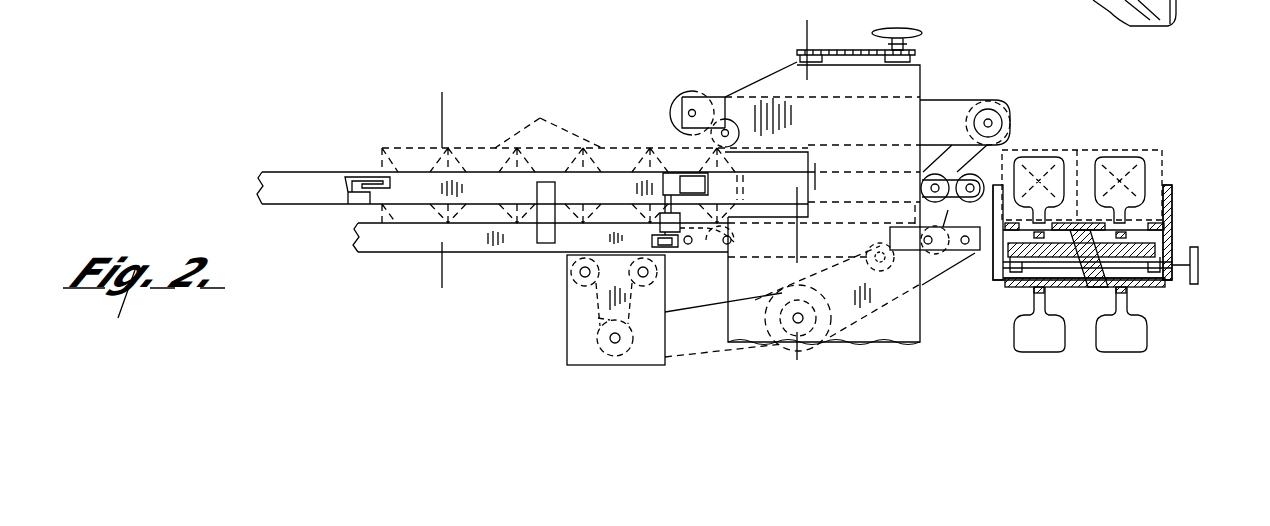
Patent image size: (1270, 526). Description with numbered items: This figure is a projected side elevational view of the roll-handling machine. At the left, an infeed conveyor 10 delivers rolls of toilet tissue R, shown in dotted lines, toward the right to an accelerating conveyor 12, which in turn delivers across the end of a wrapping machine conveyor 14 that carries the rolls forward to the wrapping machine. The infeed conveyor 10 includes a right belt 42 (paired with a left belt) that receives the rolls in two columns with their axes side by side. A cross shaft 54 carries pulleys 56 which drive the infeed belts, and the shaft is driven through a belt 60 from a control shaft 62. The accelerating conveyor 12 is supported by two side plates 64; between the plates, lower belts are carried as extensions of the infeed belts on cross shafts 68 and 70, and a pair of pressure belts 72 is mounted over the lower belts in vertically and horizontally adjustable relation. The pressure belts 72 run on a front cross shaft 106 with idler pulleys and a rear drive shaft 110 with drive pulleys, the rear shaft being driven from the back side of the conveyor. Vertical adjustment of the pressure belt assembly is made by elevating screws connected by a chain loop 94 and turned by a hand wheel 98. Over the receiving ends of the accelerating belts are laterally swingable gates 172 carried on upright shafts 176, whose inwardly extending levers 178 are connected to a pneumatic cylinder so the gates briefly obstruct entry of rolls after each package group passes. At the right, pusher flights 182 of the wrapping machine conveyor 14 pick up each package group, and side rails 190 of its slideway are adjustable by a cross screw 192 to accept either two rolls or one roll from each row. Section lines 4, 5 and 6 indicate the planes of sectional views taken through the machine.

The section line 4- 4 is at (441, 92).
The section line 5- 5 is at (806, 20).
The section line 6- 6 is at (796, 187).
The infeed conveyor 10 is at (300, 208).
The accelerating conveyor 12 is at (713, 82).
The wrapping machine conveyor 14 is at (1003, 297).
The right belt 42 is at (527, 256).
The cross shaft 54 is at (615, 338).
The pulleys 56 is at (567, 338).
The belt 60 is at (727, 347).
The control shaft 62 is at (806, 323).
The side plates 64 is at (905, 83).
The cross shaft 68 is at (725, 245).
The cross shaft 70 is at (965, 245).
The pressure belts 72 is at (720, 134).
The chain loop 94 is at (832, 50).
The hand wheel 98 is at (905, 31).
The front cross shaft 106 is at (690, 113).
The rear drive shaft 110 is at (990, 122).
The gates 172 is at (700, 184).
The upright shafts 176 is at (658, 220).
The levers 178 is at (652, 240).
The pusher flights 182 is at (1040, 165).
The side rails 190 is at (1172, 212).
The cross screw 192 is at (1115, 270).
The rolls of toilet tissue R is at (651, 177).